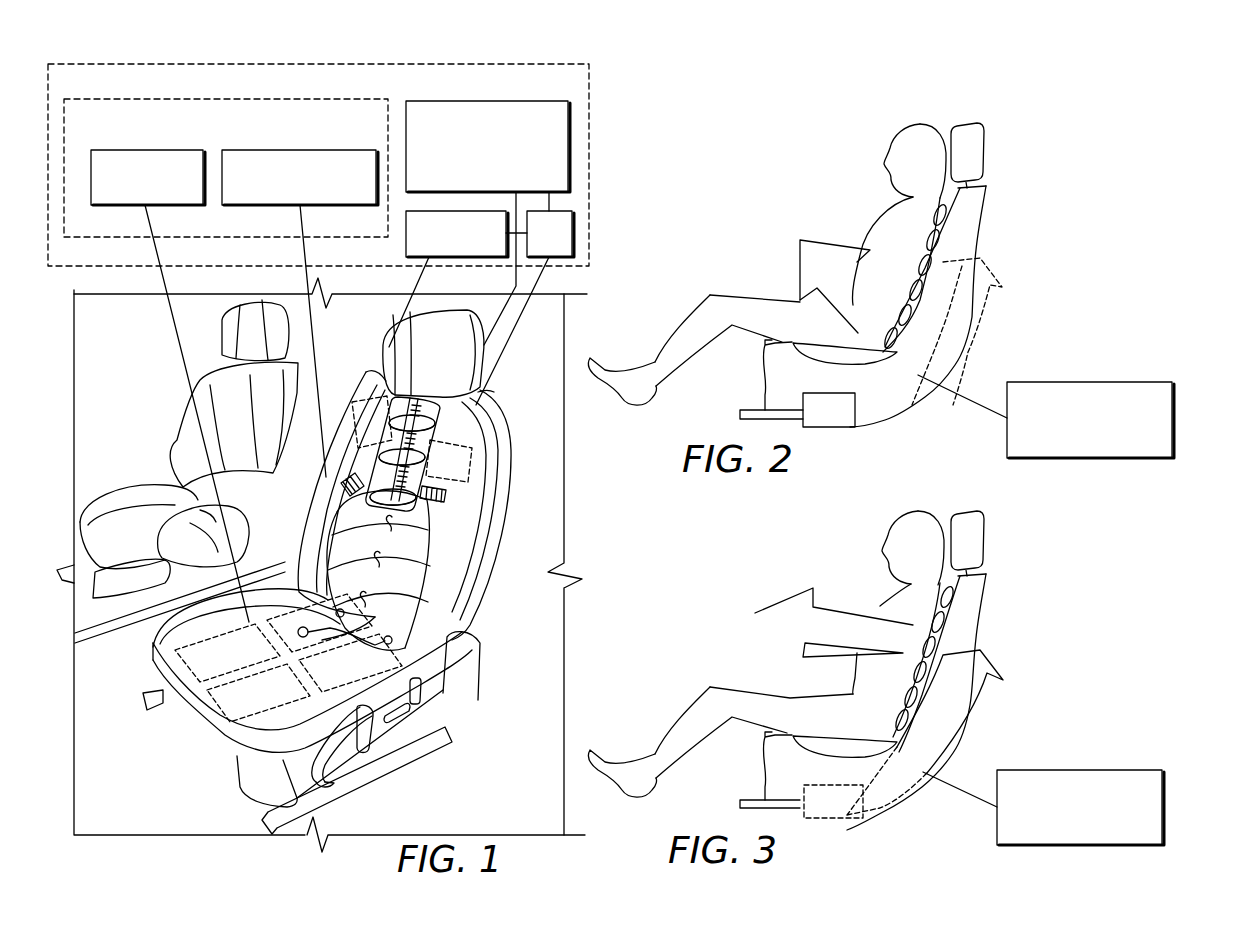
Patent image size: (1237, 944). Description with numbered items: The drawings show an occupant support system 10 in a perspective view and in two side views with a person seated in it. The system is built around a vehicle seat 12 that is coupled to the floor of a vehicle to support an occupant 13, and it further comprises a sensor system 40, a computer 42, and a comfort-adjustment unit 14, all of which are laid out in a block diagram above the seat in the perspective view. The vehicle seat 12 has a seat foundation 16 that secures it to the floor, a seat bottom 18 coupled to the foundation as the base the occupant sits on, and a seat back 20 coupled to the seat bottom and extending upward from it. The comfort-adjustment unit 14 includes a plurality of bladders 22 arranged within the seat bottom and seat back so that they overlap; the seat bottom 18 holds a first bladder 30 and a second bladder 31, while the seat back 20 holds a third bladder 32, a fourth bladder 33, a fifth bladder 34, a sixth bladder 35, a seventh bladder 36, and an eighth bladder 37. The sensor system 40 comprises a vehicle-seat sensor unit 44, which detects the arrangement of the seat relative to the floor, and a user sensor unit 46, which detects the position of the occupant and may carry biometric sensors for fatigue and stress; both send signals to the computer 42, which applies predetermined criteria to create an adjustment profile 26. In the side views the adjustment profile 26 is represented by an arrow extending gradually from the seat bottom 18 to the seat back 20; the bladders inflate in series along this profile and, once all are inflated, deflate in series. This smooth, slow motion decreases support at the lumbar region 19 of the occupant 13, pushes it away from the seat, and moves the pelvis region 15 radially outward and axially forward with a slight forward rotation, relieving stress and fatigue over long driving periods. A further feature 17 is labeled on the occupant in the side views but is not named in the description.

In FIG. 1, the occupant support system 10 is at (284, 57).
In FIG. 1, the vehicle seat 12 is at (97, 95).
In FIG. 2, the occupant 13 is at (923, 122).
In FIG. 3, the occupant 13 is at (923, 508).
In FIG. 1, the comfort-adjustment unit 14 is at (532, 96).
In FIG. 2, the pelvis region 15 is at (881, 330).
In FIG. 3, the pelvis region 15 is at (881, 720).
In FIG. 1, the seat foundation 16 is at (328, 797).
In FIG. 2, the occupant torso movement 17 is at (871, 221).
In FIG. 3, the occupant torso movement 17 is at (877, 603).
In FIG. 1, the seat bottom 18 is at (185, 707).
In FIG. 2, the seat bottom 18 is at (763, 369).
In FIG. 3, the seat bottom 18 is at (763, 759).
In FIG. 2, the lumbar region 19 is at (912, 323).
In FIG. 3, the lumbar region 19 is at (912, 714).
In FIG. 1, the seat back 20 is at (328, 150).
In FIG. 2, the seat back 20 is at (992, 228).
In FIG. 3, the seat back 20 is at (989, 619).
In FIG. 1, the plurality of bladders 22 is at (482, 412).
In FIG. 2, the plurality of bladders 22 is at (956, 213).
In FIG. 3, the plurality of bladders 22 is at (955, 602).
In FIG. 2, the adjustment profile 26 is at (1125, 382).
In FIG. 3, the adjustment profile 26 is at (1116, 770).
In FIG. 1, the first bladder 30 is at (394, 655).
In FIG. 1, the second bladder 31 is at (386, 640).
In FIG. 1, the third bladder 32 is at (394, 610).
In FIG. 1, the fourth bladder 33 is at (398, 573).
In FIG. 1, the fifth bladder 34 is at (414, 545).
In FIG. 1, the sixth bladder 35 is at (430, 492).
In FIG. 1, the seventh bladder 36 is at (430, 455).
In FIG. 1, the eighth bladder 37 is at (436, 428).
In FIG. 1, the sensor system 40 is at (443, 258).
In FIG. 1, the computer 42 is at (578, 233).
In FIG. 1, the vehicle-seat sensor unit 44 is at (227, 706).
In FIG. 1, the user sensor unit 46 is at (175, 664).